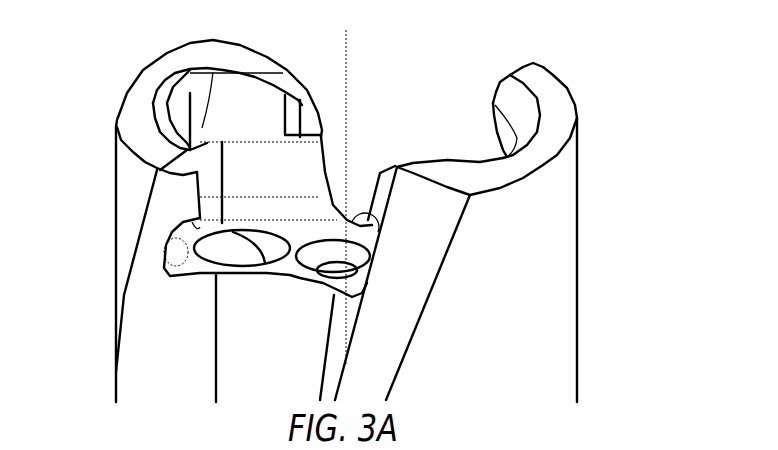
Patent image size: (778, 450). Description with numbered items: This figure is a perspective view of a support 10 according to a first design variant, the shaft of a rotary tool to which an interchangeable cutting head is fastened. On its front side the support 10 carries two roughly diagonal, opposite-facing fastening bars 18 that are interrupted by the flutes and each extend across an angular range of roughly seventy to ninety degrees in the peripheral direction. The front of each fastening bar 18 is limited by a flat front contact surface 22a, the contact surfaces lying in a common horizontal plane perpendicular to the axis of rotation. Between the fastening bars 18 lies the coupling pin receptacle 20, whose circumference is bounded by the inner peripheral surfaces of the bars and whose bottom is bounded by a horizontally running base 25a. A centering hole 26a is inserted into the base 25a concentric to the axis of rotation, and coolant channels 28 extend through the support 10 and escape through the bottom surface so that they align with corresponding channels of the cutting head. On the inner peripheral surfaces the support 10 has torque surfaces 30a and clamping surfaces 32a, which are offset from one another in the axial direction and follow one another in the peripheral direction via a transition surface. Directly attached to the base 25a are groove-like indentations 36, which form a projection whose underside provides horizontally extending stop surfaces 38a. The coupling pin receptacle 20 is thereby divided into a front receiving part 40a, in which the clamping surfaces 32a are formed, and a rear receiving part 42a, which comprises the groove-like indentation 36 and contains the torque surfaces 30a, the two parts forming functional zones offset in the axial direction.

The support 10 is at (650, 138).
The fastening bar 18 is at (530, 242).
The coupling pin receptacle 20 is at (403, 129).
The front contact surface 22a is at (555, 113).
The base 25a is at (273, 265).
The centering hole 26a is at (331, 253).
The coolant channel 28 is at (223, 248).
The torque surface 30a is at (278, 168).
The clamping surface 32a is at (170, 230).
The groove-like indentation 36 is at (170, 258).
The stop surface 38a is at (258, 155).
The front receiving part 40a is at (202, 128).
The rear receiving part 42a is at (200, 208).